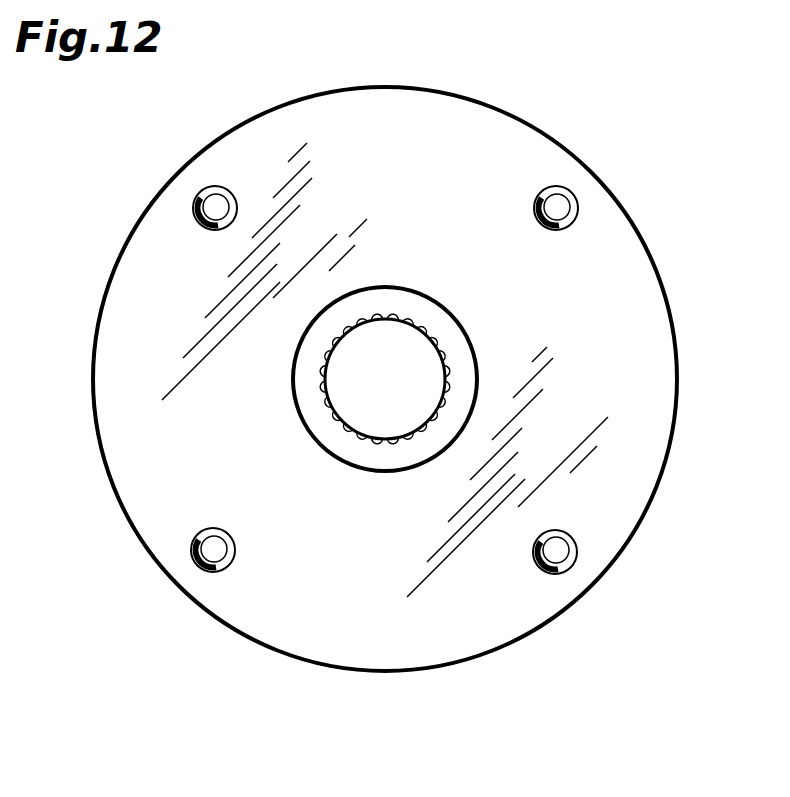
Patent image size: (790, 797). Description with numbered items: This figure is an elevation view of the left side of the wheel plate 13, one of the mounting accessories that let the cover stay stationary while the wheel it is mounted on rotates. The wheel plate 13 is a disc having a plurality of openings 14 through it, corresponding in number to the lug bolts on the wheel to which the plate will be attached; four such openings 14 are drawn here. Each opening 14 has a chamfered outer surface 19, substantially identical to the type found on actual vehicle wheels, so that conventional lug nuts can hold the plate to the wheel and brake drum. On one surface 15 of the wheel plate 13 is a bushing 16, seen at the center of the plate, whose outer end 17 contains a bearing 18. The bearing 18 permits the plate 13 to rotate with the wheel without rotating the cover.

The wheel plate 13 is at (637, 228).
The openings 14 is at (556, 207).
The surface 15 is at (558, 331).
The bushing 16 is at (430, 460).
The outer end 17 is at (397, 303).
The bearing 18 is at (377, 437).
The chamfered outer surfaces 19 is at (558, 187).